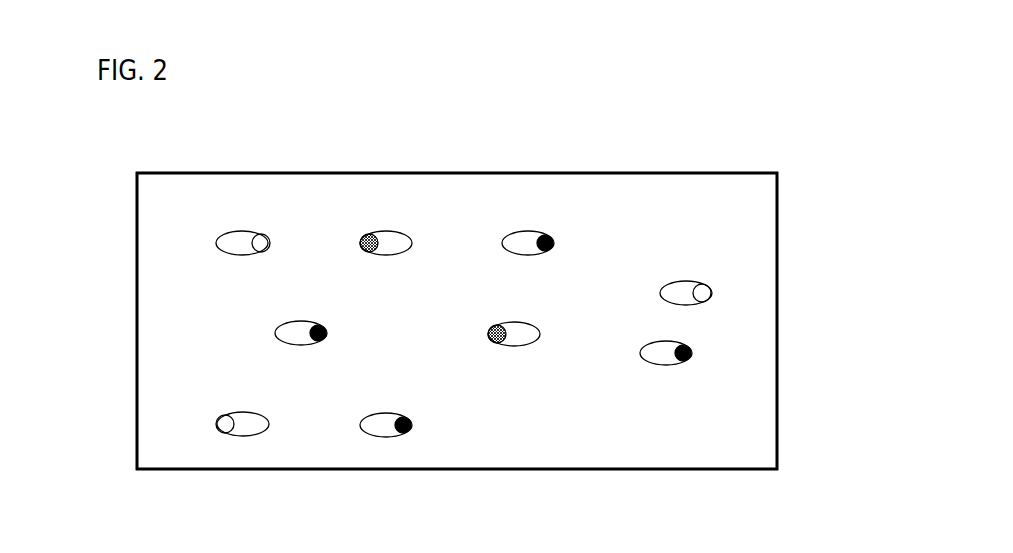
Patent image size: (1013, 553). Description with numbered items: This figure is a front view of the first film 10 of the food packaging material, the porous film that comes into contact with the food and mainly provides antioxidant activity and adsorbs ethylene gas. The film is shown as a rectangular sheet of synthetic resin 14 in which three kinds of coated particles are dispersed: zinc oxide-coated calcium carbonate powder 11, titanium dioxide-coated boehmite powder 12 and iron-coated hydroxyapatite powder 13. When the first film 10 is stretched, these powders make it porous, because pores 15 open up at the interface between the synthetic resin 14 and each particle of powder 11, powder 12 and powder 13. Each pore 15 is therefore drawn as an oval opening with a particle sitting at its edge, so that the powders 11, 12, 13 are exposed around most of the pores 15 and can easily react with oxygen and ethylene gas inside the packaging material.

The first film 10 is at (136, 323).
The zinc oxide-coated calcium carbonate powder 11 is at (258, 236).
The titanium dioxide-coated boehmite powder 12 is at (546, 236).
The iron-coated hydroxyapatite powder 13 is at (366, 234).
The synthetic resin 14 is at (767, 227).
The pores 15 is at (235, 241).